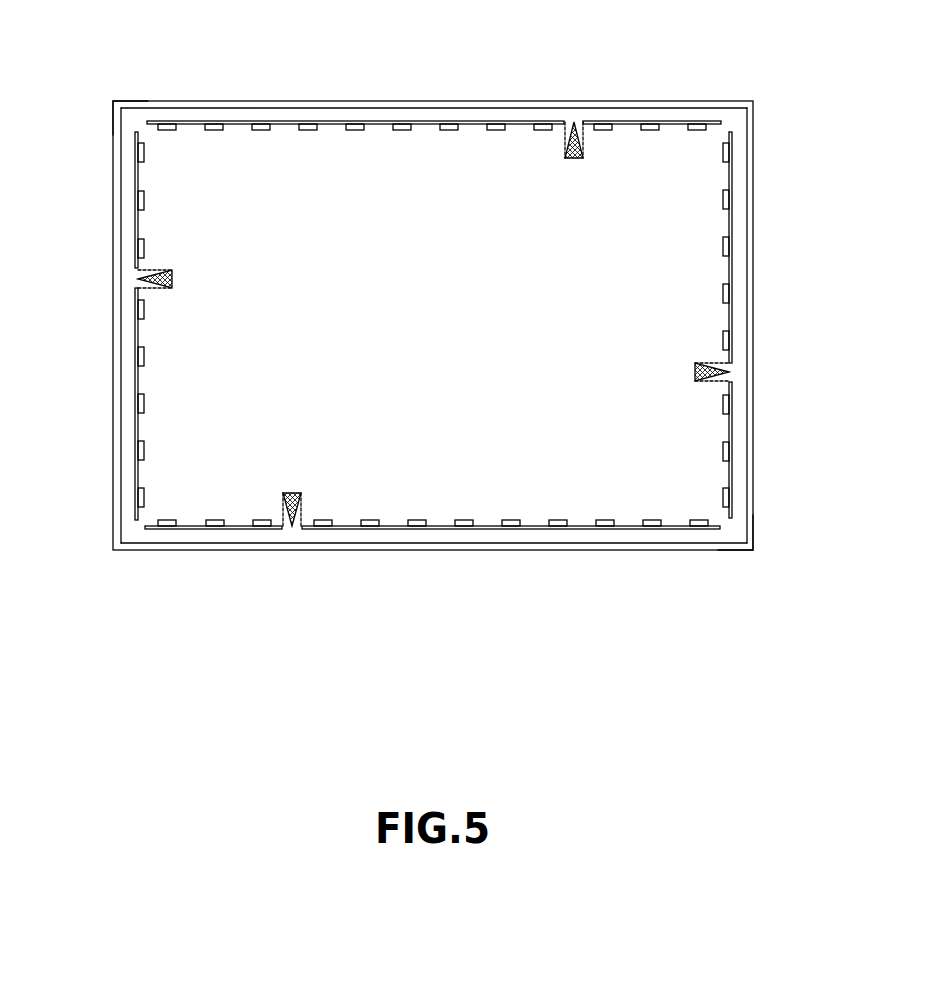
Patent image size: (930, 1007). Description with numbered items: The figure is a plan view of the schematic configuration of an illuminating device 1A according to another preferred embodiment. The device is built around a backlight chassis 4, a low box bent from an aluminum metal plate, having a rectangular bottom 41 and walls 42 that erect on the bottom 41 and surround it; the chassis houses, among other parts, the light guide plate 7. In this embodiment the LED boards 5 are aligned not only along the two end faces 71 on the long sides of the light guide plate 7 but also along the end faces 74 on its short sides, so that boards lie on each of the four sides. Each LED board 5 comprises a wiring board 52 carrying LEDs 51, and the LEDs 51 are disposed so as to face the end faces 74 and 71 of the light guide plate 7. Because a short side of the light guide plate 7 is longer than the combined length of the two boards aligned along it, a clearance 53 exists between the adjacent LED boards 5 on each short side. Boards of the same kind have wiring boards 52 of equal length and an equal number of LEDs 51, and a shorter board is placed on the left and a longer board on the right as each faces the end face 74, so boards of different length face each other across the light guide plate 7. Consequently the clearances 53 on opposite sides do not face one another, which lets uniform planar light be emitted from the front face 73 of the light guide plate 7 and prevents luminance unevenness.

The illuminating device 1A is at (757, 661).
The backlight chassis 4 is at (753, 330).
The bottom 41 is at (748, 142).
The walls 42 is at (557, 545).
The LED board 5 is at (420, 121).
The LED 51 is at (166, 124).
The wiring board 52 is at (151, 122).
The clearance 53 is at (578, 121).
The light guide plate 7 is at (695, 391).
The end face 71 is at (140, 121).
The front face 73 is at (712, 146).
The end face 74 is at (130, 290).